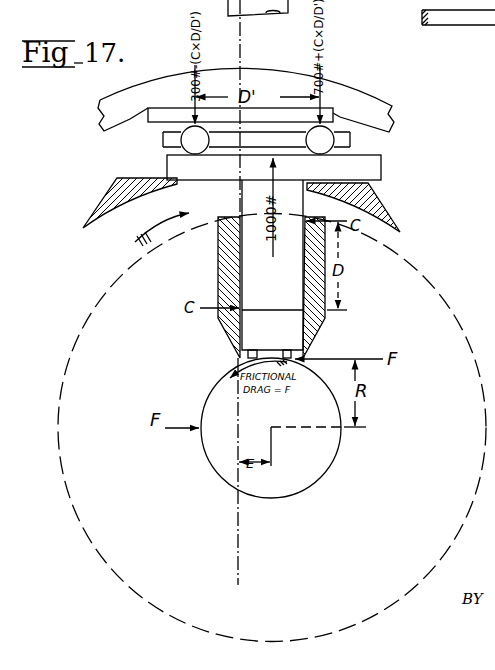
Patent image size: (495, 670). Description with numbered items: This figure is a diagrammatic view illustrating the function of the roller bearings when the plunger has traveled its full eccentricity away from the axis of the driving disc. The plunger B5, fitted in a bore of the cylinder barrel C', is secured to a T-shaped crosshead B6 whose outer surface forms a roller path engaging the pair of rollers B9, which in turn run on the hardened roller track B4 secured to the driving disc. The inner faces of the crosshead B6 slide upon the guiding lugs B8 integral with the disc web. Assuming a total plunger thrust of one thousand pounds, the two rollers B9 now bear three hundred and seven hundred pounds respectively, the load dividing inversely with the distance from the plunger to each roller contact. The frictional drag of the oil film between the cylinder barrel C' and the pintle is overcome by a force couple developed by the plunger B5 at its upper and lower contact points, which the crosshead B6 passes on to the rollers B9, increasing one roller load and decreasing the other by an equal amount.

The roller track B4 is at (338, 115).
The plunger B5 is at (272, 269).
The crosshead B6 is at (380, 168).
The lugs B8 is at (104, 198).
The rollers B9 is at (330, 143).
The cylinder barrel C' is at (272, 428).